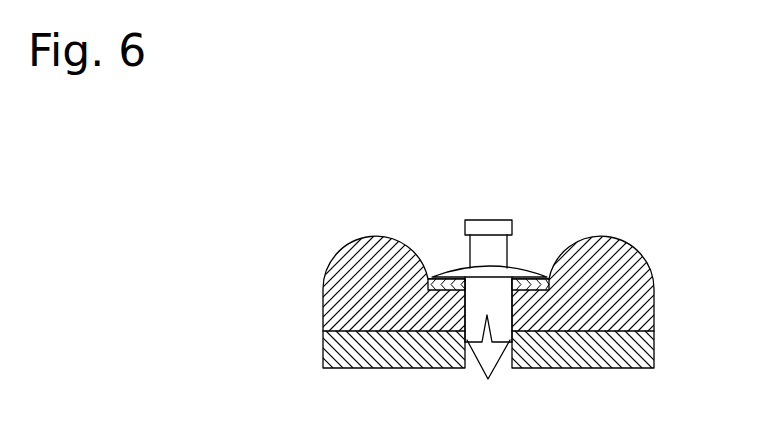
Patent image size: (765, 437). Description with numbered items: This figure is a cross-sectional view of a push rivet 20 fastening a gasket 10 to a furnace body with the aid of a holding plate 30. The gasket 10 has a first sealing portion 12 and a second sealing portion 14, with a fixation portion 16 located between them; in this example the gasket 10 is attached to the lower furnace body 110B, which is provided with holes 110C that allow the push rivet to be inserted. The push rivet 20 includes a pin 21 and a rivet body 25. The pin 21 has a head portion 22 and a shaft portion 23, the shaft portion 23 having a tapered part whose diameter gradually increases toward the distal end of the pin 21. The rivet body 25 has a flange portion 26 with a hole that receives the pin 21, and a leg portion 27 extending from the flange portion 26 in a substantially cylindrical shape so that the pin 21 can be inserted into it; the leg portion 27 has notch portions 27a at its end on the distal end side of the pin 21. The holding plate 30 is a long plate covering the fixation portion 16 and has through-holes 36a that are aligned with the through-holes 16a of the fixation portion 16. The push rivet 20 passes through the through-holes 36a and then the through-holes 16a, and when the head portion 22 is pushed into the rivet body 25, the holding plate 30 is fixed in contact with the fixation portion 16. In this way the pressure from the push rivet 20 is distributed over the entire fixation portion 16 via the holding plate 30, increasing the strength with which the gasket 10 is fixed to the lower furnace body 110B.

The gasket 10 is at (280, 262).
The first sealing portion 12 is at (333, 263).
The second sealing portion 14 is at (648, 260).
The fixation portion 16 is at (512, 317).
The through-holes 16a is at (536, 340).
The push rivet 20 is at (472, 259).
The pin 21 is at (482, 220).
The head portion 22 is at (496, 221).
The shaft portion 23 is at (508, 242).
The rivet body 25 is at (438, 266).
The flange portion 26 is at (448, 268).
The leg portion 27 is at (463, 306).
The notch portions 27a is at (486, 344).
The holding plate 30 is at (549, 275).
The through-holes 36a is at (513, 274).
The lower furnace body 110B is at (323, 362).
The holes 110C is at (465, 342).